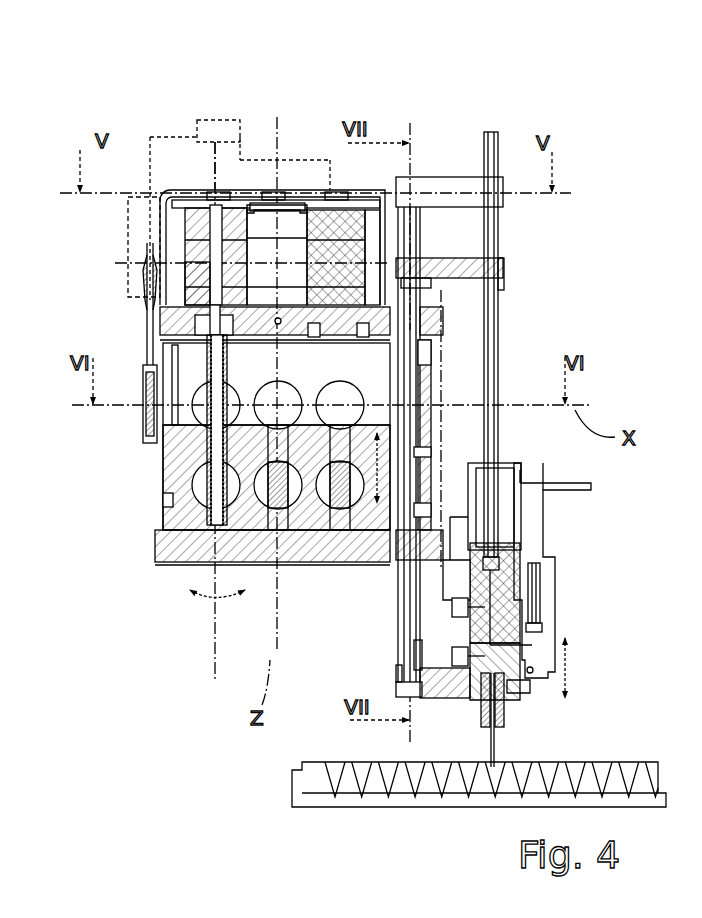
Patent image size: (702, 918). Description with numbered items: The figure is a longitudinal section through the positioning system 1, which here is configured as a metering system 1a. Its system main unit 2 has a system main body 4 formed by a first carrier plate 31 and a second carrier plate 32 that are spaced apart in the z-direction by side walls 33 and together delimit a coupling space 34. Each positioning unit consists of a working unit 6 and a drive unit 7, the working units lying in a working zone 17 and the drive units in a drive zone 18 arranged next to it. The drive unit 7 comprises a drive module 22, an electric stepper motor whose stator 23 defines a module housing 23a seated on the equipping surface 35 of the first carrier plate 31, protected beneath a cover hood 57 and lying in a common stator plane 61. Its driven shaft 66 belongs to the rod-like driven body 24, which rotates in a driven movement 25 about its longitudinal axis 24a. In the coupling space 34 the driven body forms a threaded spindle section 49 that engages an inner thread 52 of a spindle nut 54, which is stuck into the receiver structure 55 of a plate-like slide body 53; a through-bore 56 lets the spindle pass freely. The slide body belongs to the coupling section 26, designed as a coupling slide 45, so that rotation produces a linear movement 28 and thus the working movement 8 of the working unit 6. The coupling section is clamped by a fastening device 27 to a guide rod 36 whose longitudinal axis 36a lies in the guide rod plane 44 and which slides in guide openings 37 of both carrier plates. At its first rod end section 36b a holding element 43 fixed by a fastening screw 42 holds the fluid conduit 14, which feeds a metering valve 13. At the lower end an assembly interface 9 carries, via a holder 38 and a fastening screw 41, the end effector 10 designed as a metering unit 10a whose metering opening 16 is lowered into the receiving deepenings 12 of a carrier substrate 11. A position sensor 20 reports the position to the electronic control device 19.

The positioning system 1 is at (352, 394).
The metering system 1a is at (618, 125).
The system main unit 2 is at (227, 555).
The system main body 4 is at (160, 555).
The working unit 6 is at (397, 622).
The drive unit 7 is at (227, 434).
The working movement 8 is at (567, 665).
The assembly interface 9 is at (413, 677).
The end effector 10 is at (598, 578).
The metering unit 10a is at (598, 578).
The carrier substrate 11 is at (479, 754).
The receiving deepenings 12 is at (520, 772).
The metering valve 13 is at (540, 612).
The fluid conduit 14 is at (500, 318).
The metering opening 16 is at (497, 762).
The working zone 17 is at (455, 125).
The drive zone 18 is at (307, 160).
The electronic control device 19 is at (218, 128).
The position sensor 20 is at (143, 400).
The drive module 22 is at (187, 232).
The stator 23 is at (198, 227).
The module housing 23a is at (192, 278).
The driven body 24 is at (205, 356).
The longitudinal axis 24a is at (215, 620).
The driven movement 25 is at (203, 560).
The coupling section 26 is at (94, 507).
The fastening device 27 is at (422, 508).
The linear movement 28 is at (378, 422).
The first carrier plate 31 is at (175, 320).
The second carrier plate 32 is at (157, 537).
The side walls 33 is at (440, 372).
The coupling space 34 is at (418, 362).
The equipping surface 35 is at (293, 243).
The guide rod 36 is at (474, 444).
The longitudinal axis 36a is at (432, 283).
The first rod end section 36b is at (418, 657).
The guide opening 37 is at (418, 305).
The holder 38 is at (440, 700).
The fastening screw 41 is at (398, 690).
The fastening screw 42 is at (427, 278).
The holding element 43 is at (490, 190).
The guide rod plane 44 is at (408, 143).
The coupling slide 45 is at (163, 500).
The threaded spindle section 49 is at (213, 453).
The inner thread 52 is at (231, 598).
The slide body 53 is at (190, 517).
The spindle nut 54 is at (203, 495).
The receiver structure 55 is at (262, 495).
The through-bore 56 is at (340, 381).
The cover hood 57 is at (347, 188).
The stator plane 61 is at (128, 265).
The driven shaft 66 is at (216, 250).